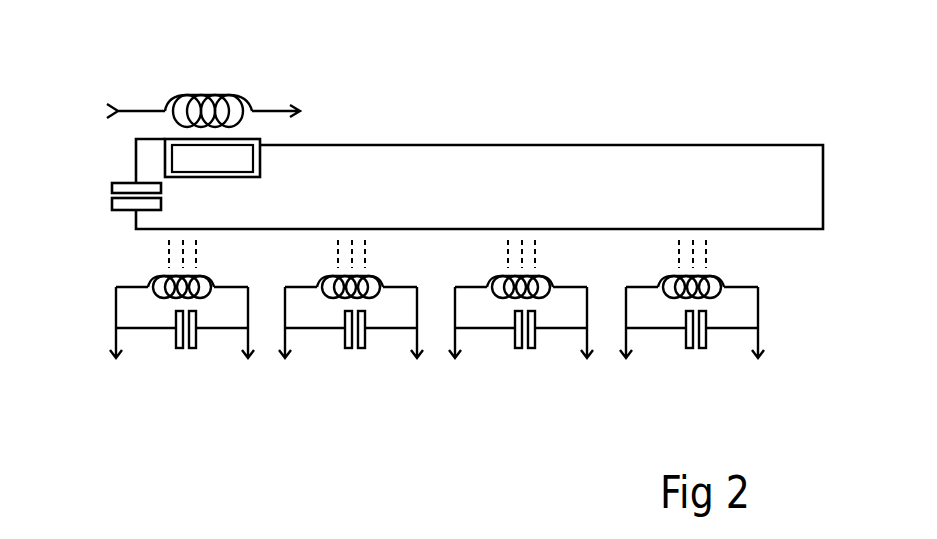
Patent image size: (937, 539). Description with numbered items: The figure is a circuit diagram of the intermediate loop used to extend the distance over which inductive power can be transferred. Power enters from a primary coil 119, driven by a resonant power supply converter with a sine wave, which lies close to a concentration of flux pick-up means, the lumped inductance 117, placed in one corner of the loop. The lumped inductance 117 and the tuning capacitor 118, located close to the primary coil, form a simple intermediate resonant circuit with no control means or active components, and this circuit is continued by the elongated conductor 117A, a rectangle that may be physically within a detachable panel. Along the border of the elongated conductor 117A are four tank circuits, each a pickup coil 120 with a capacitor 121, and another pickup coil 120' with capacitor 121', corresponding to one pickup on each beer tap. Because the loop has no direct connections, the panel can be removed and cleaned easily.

The lumped inductance 117 is at (270, 180).
The elongated conductor 117A is at (600, 144).
The tuning capacitor 118 is at (115, 180).
The primary coil 119 is at (203, 90).
The pickup coil 120 is at (772, 298).
The capacitor 121 is at (778, 344).
The pickup coil 120' is at (498, 351).
The capacitor 121' is at (566, 383).